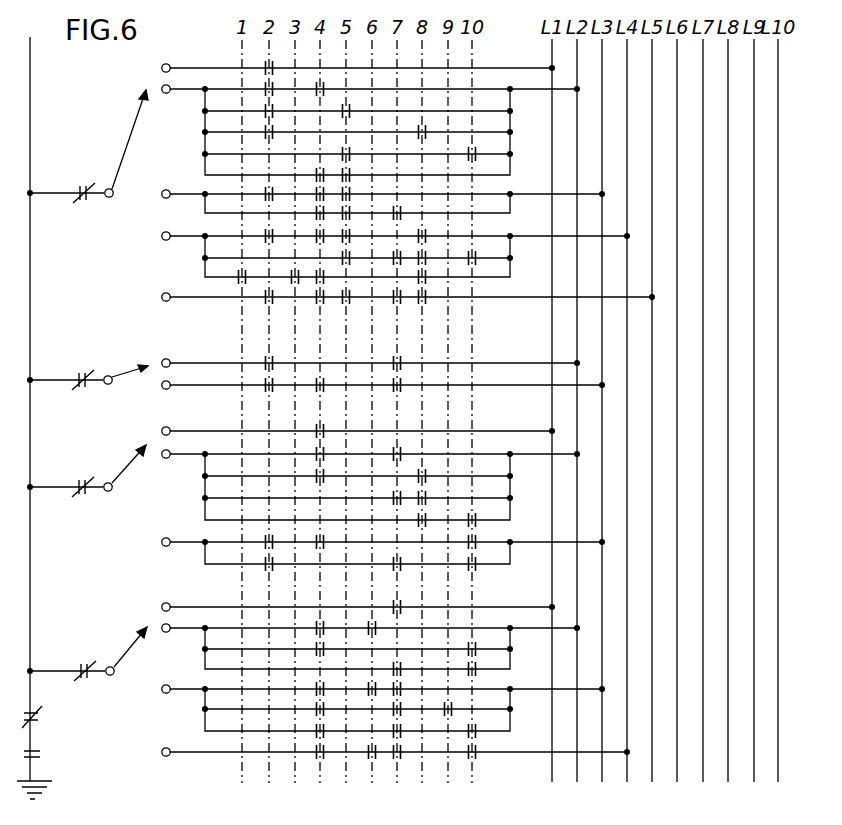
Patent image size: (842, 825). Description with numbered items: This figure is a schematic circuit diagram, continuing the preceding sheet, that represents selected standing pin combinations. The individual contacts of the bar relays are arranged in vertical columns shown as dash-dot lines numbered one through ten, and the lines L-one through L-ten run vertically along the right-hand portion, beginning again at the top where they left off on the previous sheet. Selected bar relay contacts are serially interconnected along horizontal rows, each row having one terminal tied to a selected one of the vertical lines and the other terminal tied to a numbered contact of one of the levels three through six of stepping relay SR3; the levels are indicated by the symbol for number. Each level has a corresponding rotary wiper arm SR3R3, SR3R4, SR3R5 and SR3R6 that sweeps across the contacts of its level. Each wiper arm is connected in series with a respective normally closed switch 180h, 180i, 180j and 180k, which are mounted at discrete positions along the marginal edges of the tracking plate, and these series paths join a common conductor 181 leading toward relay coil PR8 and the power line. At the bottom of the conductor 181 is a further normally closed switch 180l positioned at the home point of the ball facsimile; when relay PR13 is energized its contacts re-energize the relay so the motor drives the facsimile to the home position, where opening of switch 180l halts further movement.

The common bus conductor 181 is at (33, 281).
The normally closed switch 180h is at (83, 208).
The normally closed switch 180i is at (82, 375).
The normally closed switch 180j is at (82, 482).
The normally closed switch 180k is at (83, 663).
The normally closed switch 180l is at (40, 718).
The relay PR13 is at (42, 757).
The wiper arm SR3R3 is at (132, 129).
The wiper arm SR3R4 is at (124, 383).
The wiper arm SR3R5 is at (125, 478).
The wiper arm SR3R6 is at (127, 660).